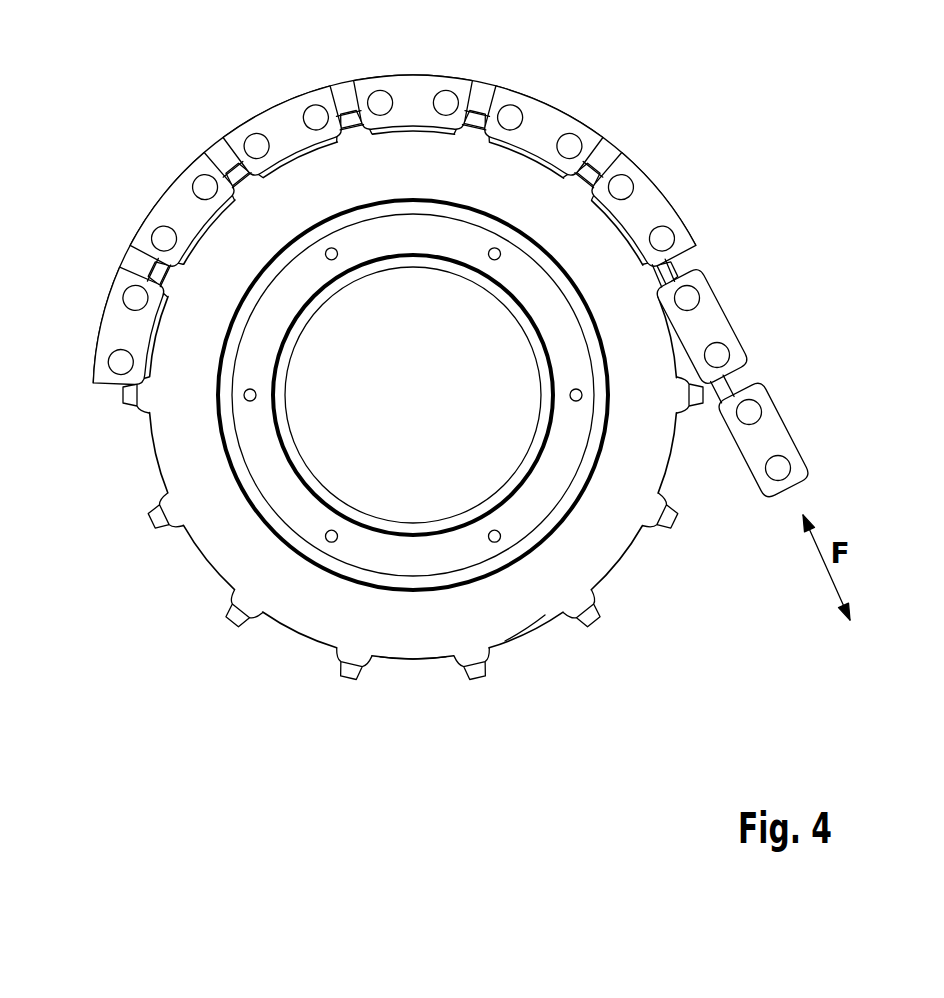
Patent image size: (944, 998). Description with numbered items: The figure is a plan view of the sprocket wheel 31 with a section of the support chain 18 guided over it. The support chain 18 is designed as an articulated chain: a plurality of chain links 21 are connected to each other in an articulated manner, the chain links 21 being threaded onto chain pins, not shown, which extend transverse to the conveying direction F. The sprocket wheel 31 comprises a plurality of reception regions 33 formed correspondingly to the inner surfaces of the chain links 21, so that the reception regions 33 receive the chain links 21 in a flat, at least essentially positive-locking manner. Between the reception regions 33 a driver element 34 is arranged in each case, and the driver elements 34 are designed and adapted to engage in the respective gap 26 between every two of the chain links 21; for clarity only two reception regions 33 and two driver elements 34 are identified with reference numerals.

The support chain 18 is at (449, 257).
The chain link 21 is at (278, 120).
The gap 26 is at (345, 95).
The sprocket wheel 31 is at (224, 556).
The reception region 33 is at (410, 662).
The driver element 34 is at (343, 682).